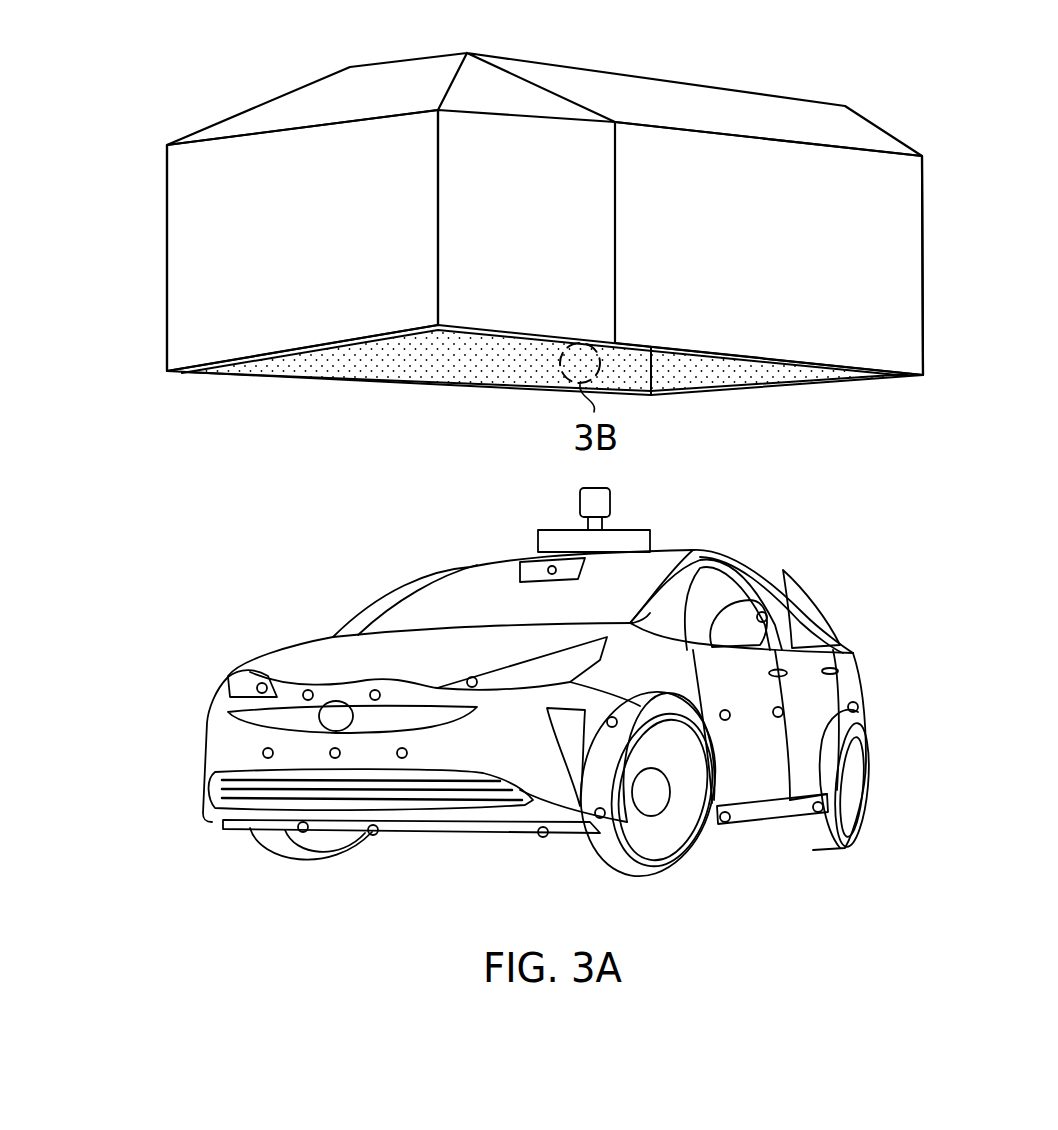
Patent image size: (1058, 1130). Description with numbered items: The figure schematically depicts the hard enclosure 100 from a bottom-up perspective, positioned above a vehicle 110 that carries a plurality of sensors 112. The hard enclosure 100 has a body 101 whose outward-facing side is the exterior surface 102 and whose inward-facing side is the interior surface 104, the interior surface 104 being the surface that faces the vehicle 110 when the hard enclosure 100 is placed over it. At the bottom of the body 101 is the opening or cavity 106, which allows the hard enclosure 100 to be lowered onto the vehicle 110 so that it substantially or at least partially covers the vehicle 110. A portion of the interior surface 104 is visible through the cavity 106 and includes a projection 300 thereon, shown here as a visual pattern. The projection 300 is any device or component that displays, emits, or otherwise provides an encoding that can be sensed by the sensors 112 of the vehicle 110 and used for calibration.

The hard enclosure 100 is at (207, 93).
The body 101 is at (570, 62).
The exterior surface 102 is at (858, 135).
The interior surface 104 is at (151, 351).
The opening 106 is at (724, 361).
The projection 300 is at (427, 357).
The vehicle 110 is at (224, 628).
The sensors 112 is at (178, 667).